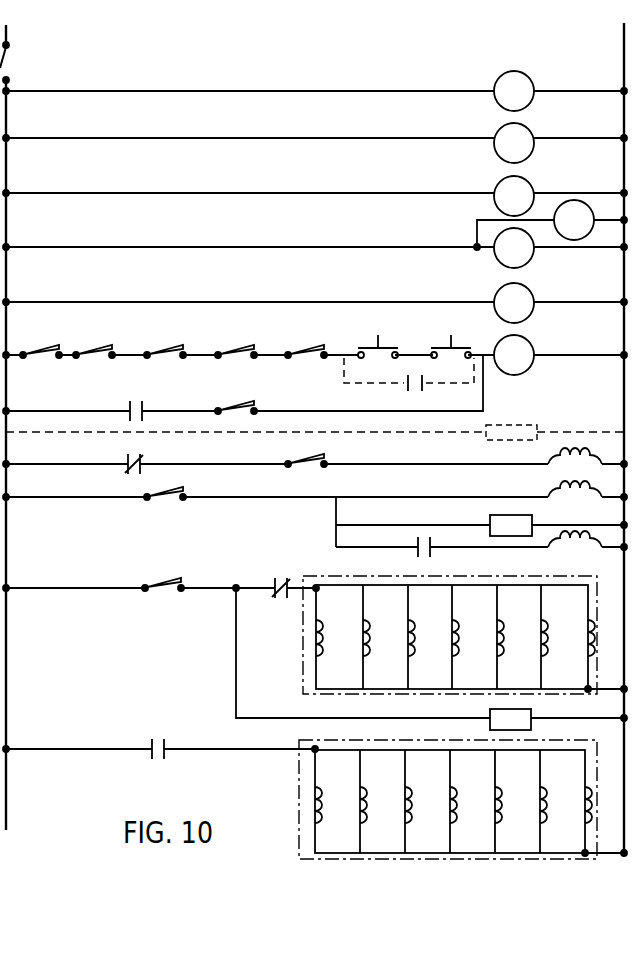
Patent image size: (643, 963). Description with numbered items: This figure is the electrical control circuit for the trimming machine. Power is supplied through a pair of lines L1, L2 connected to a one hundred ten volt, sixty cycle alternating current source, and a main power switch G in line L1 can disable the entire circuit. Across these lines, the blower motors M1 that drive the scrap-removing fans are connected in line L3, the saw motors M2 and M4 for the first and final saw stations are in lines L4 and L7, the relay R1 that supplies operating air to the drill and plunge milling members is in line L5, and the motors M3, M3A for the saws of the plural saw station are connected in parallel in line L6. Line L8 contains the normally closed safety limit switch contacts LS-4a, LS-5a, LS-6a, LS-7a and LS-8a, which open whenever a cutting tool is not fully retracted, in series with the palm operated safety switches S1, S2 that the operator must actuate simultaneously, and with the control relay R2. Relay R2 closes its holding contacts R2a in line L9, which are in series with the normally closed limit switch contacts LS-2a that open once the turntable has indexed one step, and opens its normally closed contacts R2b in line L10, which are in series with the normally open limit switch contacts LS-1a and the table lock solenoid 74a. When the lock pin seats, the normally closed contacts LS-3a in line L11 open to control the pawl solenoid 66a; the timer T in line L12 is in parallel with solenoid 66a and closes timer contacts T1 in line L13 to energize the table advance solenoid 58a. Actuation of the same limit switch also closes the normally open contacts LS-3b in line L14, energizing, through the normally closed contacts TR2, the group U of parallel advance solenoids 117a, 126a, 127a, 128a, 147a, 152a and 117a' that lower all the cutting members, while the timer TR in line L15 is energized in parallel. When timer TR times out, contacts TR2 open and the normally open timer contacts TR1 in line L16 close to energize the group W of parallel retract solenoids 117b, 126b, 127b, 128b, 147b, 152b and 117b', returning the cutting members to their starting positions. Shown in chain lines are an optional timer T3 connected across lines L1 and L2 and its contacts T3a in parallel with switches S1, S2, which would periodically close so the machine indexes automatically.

The line L1 is at (8, 31).
The line L2 is at (622, 26).
The main power switch G is at (8, 66).
The line L3 is at (32, 92).
The line L4 is at (32, 139).
The line L5 is at (32, 194).
The line L6 is at (32, 248).
The line L7 is at (32, 303).
The line L8 is at (22, 357).
The line L9 is at (22, 413).
The line L10 is at (32, 465).
The line L11 is at (32, 498).
The line L12 is at (347, 527).
The line L13 is at (347, 549).
The line L14 is at (32, 589).
The line L15 is at (240, 721).
The line L16 is at (18, 752).
The blower motors M1 is at (514, 91).
The electrical motor M2 is at (514, 143).
The relay R1 is at (514, 196).
The motor M3 is at (514, 248).
The motor M3A is at (574, 220).
The electrical motor M4 is at (514, 303).
The control relay R2 is at (514, 355).
The limit switch contacts LS-4a is at (52, 348).
The limit switch contacts LS-5a is at (92, 358).
The limit switch contacts LS-6a is at (165, 352).
The limit switch contacts LS-7a is at (238, 352).
The limit switch contacts LS-8a is at (305, 348).
The palm operated safety switch S1 is at (390, 350).
The palm operated safety switch S2 is at (463, 350).
The timer contacts T3a is at (410, 388).
The timer T3 is at (528, 425).
The holding contacts R2a is at (136, 400).
The limit switch contacts LS-2a is at (240, 406).
The contacts R2b is at (142, 462).
The limit switch contacts LS-1a is at (298, 468).
The table lock solenoid 74a is at (550, 473).
The limit switch contacts LS-3a is at (167, 503).
The solenoid 66a is at (556, 505).
The timer T is at (511, 525).
The timer contacts T1 is at (430, 538).
The table advance solenoid 58a is at (556, 555).
The limit switch contacts LS-3b is at (165, 581).
The timer contacts TR2 is at (284, 567).
The group of advance solenoids U is at (300, 638).
The advance solenoid 117a is at (288, 630).
The advance solenoid 126a is at (359, 617).
The advance solenoid 127a is at (404, 617).
The advance solenoid 128a is at (449, 617).
The advance solenoid 147a is at (494, 617).
The advance solenoid 152a is at (538, 617).
The advance solenoid 117a' is at (570, 622).
The timer TR is at (510, 719).
The timer contacts TR1 is at (160, 762).
The group of retract solenoids W is at (299, 820).
The retract solenoid 117b is at (277, 803).
The retract solenoid 126b is at (358, 781).
The retract solenoid 127b is at (403, 781).
The retract solenoid 128b is at (448, 781).
The retract solenoid 147b is at (493, 781).
The retract solenoid 152b is at (538, 781).
The retract solenoid 117b' is at (567, 788).